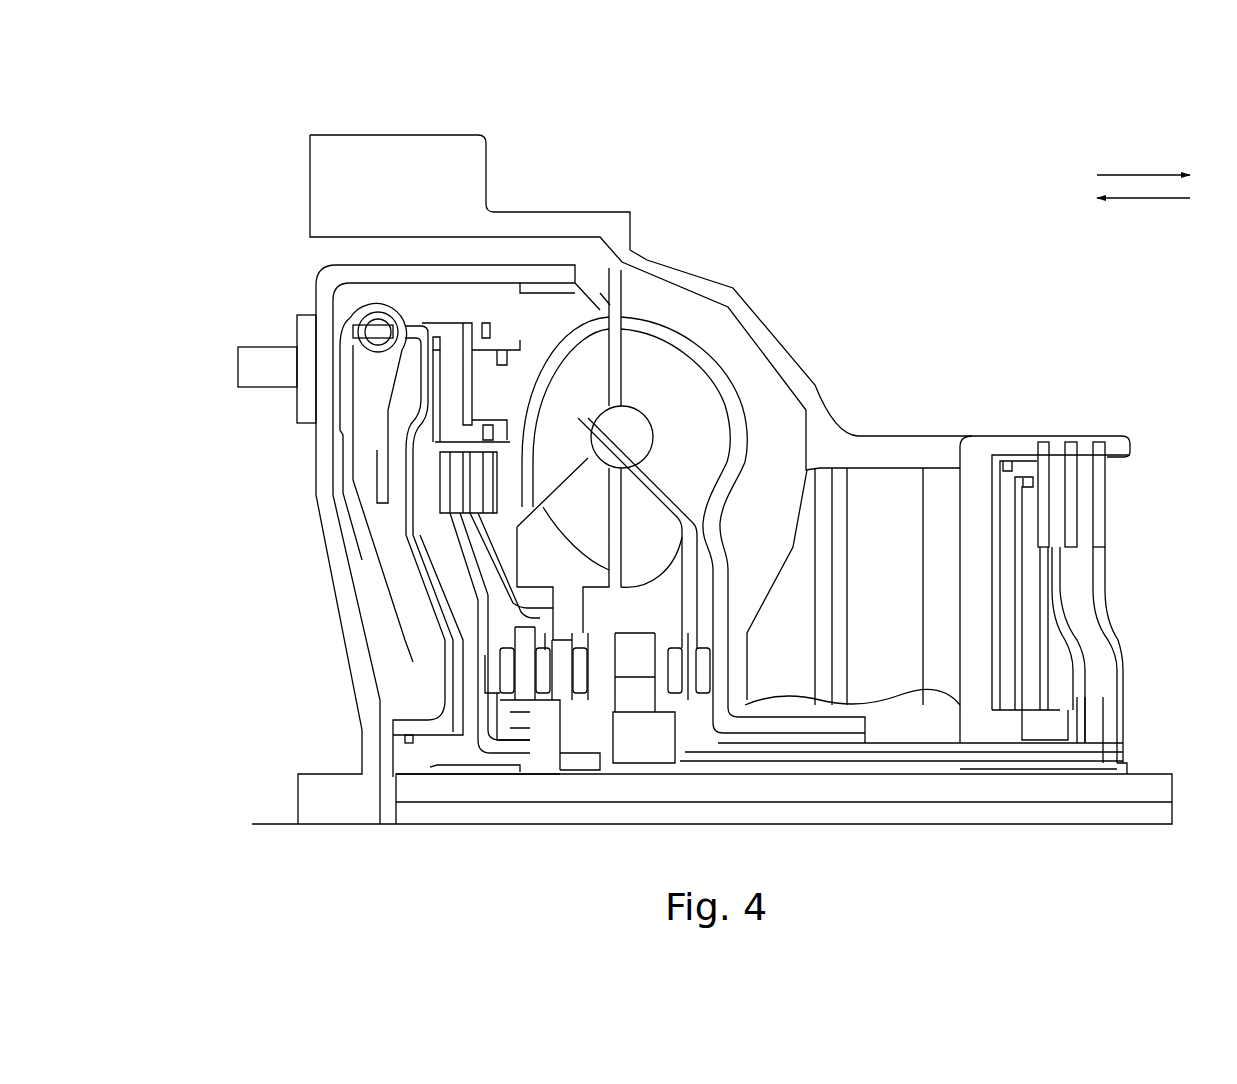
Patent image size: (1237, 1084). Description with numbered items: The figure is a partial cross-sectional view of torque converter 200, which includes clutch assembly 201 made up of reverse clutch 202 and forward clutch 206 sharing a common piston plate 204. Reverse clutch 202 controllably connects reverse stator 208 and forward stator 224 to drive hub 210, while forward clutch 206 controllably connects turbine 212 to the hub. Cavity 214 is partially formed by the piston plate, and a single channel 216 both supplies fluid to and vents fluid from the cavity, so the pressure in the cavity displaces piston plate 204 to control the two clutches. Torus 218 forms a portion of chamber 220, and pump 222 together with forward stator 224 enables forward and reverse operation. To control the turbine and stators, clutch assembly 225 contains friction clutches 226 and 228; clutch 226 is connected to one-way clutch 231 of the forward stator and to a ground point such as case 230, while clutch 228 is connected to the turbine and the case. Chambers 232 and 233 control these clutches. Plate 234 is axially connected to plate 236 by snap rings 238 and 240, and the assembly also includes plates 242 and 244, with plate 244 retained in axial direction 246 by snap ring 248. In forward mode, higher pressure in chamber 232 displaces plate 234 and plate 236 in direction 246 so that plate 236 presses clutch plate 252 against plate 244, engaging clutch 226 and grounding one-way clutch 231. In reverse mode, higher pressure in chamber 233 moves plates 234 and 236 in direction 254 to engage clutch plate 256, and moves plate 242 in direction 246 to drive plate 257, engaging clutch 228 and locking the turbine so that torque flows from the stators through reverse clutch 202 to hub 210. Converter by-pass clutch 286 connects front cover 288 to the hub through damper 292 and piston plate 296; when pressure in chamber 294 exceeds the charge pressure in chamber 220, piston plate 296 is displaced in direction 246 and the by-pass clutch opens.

The torque converter 200 is at (763, 160).
The clutch assembly 201 is at (437, 307).
The reverse clutch 202 is at (438, 523).
The piston plate 204 is at (455, 580).
The forward clutch 206 is at (500, 340).
The reverse stator 208 is at (576, 536).
The drive hub 210 is at (445, 755).
The turbine 212 is at (522, 478).
The cavity 214 is at (445, 620).
The channel 216 is at (832, 775).
The torus 218 is at (610, 352).
The chamber 220 is at (607, 330).
The pump 222 is at (639, 458).
The forward stator 224 is at (632, 550).
The clutch assembly 225 is at (1118, 578).
The clutch 226 is at (1085, 415).
The clutch 228 is at (1057, 415).
The case 230 is at (827, 445).
The one-way clutch 231 is at (650, 778).
The chamber 232 is at (1000, 487).
The chamber 233 is at (1023, 652).
The plate 234 is at (1010, 687).
The plate 236 is at (1072, 443).
The snap ring 238 is at (1063, 477).
The snap ring 240 is at (1080, 455).
The plate 242 is at (1050, 685).
The plate 244 is at (1107, 512).
The axial direction 246 is at (1147, 175).
The snap ring 248 is at (1112, 468).
The clutch plate 252 is at (1085, 497).
The direction 254 is at (1147, 198).
The clutch plate 256 is at (1060, 527).
The plate 257 is at (1046, 443).
The converter by-pass clutch 286 is at (323, 322).
The front cover 288 is at (316, 460).
The damper 292 is at (350, 298).
The chamber 294 is at (350, 530).
The piston plate 296 is at (358, 510).